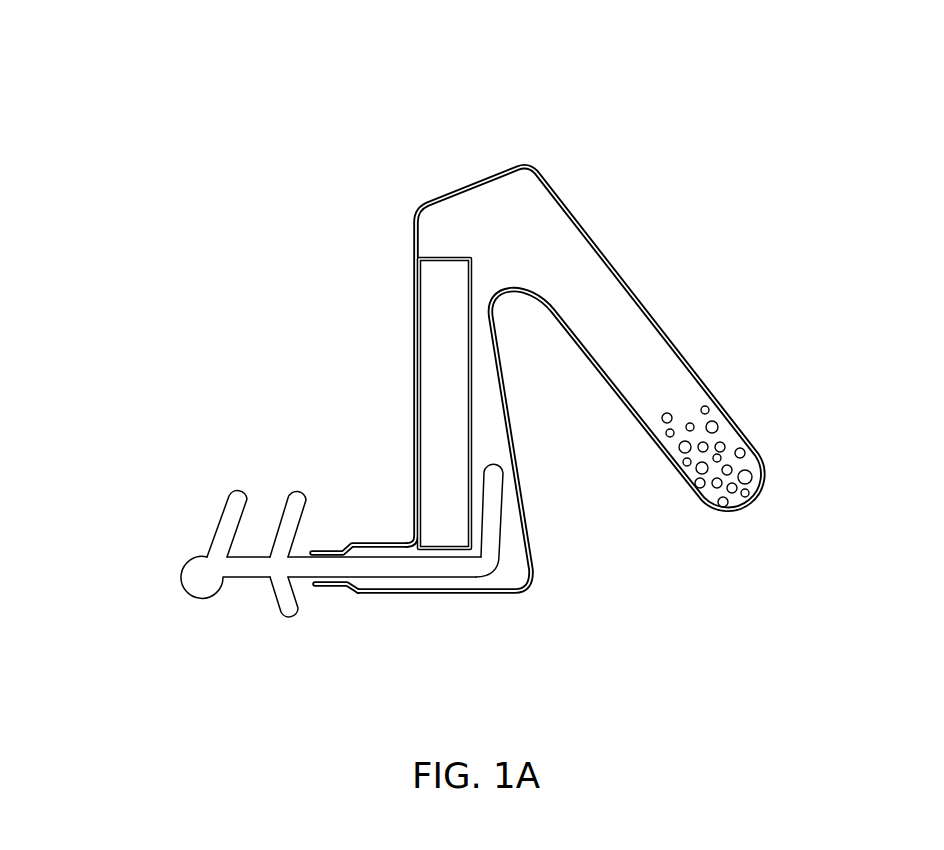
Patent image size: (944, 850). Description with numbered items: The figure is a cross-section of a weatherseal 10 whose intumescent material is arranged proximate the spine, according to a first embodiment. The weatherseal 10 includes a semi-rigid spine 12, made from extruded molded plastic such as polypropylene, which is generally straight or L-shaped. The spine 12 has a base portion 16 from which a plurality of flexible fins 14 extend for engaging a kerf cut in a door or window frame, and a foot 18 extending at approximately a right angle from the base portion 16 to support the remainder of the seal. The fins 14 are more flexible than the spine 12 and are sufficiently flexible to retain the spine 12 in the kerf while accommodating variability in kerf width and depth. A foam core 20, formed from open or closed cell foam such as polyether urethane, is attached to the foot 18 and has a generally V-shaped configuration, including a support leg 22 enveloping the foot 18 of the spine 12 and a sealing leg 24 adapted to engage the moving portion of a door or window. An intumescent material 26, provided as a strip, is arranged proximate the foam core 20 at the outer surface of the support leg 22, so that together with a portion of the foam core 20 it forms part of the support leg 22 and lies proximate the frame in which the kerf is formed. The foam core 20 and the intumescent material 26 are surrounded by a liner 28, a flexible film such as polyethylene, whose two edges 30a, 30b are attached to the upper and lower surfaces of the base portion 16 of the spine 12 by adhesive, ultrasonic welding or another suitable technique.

The weatherseal 10 is at (458, 359).
The spine 12 is at (393, 550).
The flexible fins 14 is at (222, 519).
The base portion 16 is at (357, 574).
The foot 18 is at (494, 523).
The foam core 20 is at (537, 392).
The support leg 22 is at (328, 373).
The sealing leg 24 is at (670, 316).
The intumescent material 26 is at (415, 403).
The liner 28 is at (614, 263).
The liner edge 30a is at (325, 551).
The liner edge 30b is at (342, 570).